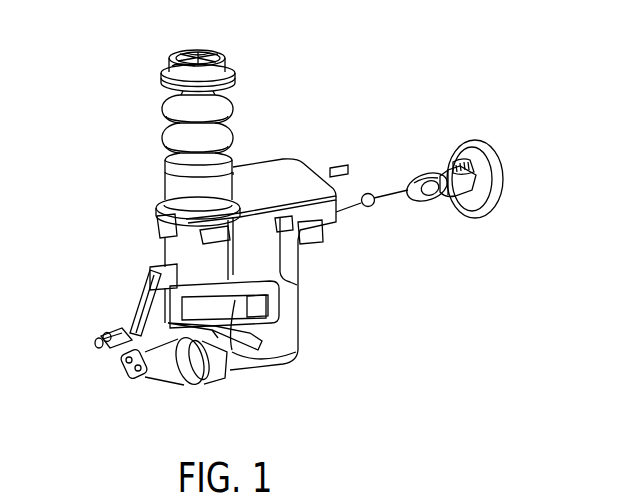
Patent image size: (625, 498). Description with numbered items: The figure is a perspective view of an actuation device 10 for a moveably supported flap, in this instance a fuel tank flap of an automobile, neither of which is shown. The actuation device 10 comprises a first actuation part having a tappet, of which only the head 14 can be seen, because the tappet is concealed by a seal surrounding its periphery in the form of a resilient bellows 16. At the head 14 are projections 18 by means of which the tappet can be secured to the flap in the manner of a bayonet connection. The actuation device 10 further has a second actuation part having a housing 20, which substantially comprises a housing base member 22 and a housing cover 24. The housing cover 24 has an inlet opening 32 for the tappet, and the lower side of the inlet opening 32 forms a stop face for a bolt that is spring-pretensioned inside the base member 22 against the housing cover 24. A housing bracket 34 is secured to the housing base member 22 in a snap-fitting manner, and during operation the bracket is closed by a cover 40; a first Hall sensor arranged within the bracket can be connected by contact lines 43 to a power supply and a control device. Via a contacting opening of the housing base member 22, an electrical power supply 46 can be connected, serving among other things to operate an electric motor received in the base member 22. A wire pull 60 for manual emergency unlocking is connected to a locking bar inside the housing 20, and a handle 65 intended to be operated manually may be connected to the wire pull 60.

The actuation device 10 is at (357, 63).
The head 14 is at (198, 58).
The projections 18 is at (225, 58).
The resilient bellows 16 is at (233, 111).
The housing cover 24 is at (283, 176).
The inlet opening 32 is at (163, 201).
The housing 20 is at (299, 312).
The housing base member 22 is at (276, 354).
The housing bracket 34 is at (243, 309).
The cover 40 is at (146, 308).
The contact lines 43 is at (98, 338).
The electrical power supply 46 is at (161, 375).
The wire pull 60 is at (392, 195).
The handle 65 is at (503, 177).